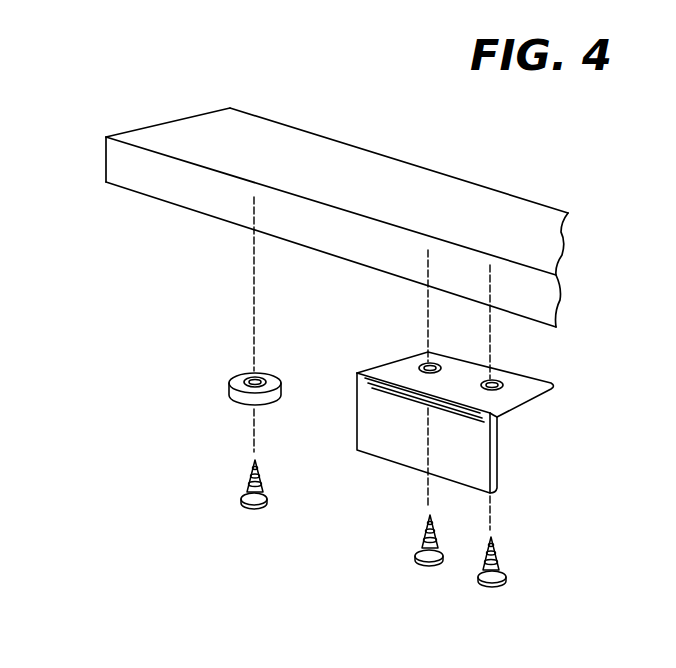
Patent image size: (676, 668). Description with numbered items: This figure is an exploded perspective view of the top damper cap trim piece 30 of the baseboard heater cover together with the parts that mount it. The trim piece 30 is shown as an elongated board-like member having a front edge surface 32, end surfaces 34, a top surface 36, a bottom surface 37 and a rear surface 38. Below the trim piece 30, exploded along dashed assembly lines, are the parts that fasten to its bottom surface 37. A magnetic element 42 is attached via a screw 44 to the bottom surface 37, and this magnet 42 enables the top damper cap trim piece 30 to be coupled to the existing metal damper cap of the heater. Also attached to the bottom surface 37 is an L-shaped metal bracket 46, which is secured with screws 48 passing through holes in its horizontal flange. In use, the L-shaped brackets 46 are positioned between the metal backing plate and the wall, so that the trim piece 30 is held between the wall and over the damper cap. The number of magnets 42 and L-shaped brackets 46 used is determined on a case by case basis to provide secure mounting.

The top damper cap trim piece 30 is at (190, 100).
The front edge surface 32 is at (323, 137).
The end surfaces 34 is at (106, 155).
The top surface 36 is at (466, 210).
The bottom surface 37 is at (193, 210).
The rear surface 38 is at (163, 182).
The magnetic element 42 is at (232, 393).
The screw 44 is at (245, 507).
The L-shaped metal brackets 46 is at (543, 399).
The screws 48 is at (487, 585).